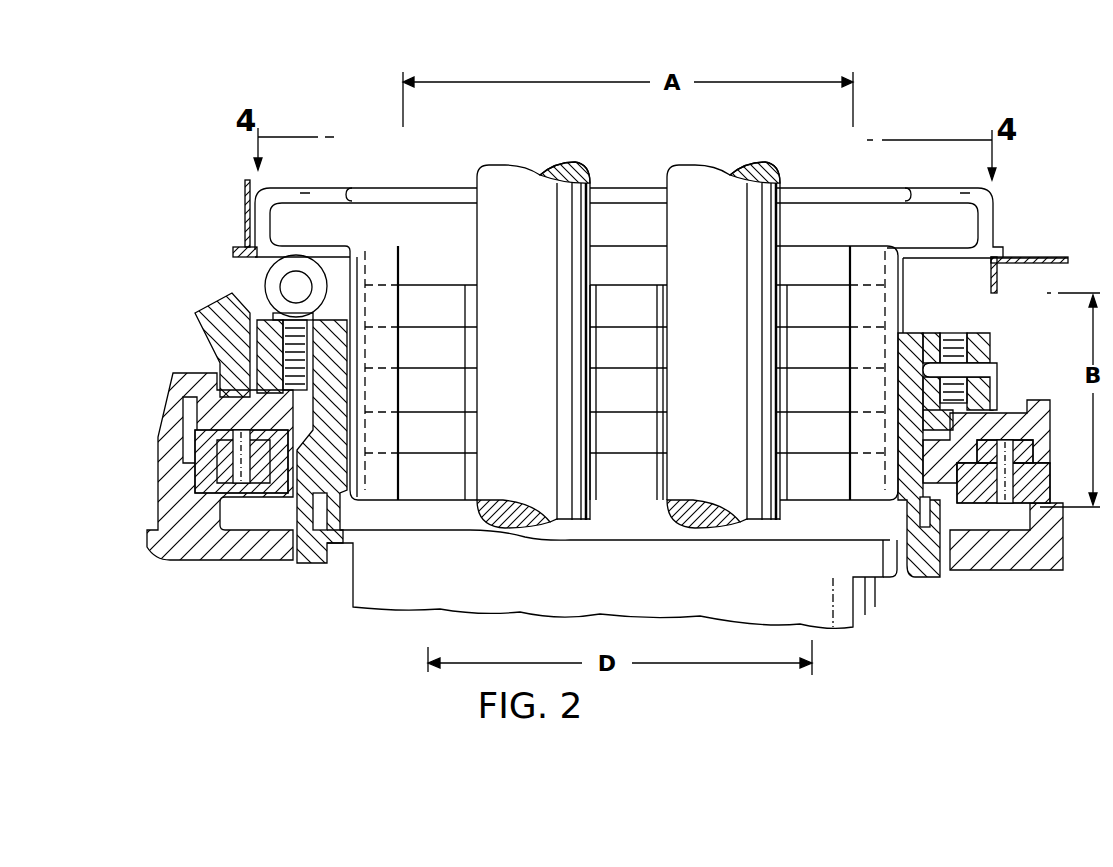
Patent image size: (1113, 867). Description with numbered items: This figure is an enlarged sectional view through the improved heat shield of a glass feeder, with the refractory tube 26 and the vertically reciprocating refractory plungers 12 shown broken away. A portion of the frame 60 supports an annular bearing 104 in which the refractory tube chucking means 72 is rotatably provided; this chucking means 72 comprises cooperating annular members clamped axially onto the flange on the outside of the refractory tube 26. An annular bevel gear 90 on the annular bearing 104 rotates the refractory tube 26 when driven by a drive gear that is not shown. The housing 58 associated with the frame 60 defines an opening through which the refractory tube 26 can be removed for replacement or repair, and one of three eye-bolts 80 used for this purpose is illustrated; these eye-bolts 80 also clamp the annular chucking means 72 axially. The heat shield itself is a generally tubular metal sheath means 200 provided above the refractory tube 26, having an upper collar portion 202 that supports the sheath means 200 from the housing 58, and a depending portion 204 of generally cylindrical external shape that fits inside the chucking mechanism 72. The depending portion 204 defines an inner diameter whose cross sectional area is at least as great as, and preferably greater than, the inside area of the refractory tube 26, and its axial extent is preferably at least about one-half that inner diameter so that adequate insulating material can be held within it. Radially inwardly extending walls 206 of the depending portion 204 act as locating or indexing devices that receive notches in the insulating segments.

The refractory plungers 12 is at (592, 222).
The refractory tube 26 is at (352, 582).
The housing 58 is at (244, 200).
The frame 60 is at (251, 563).
The refractory tube chucking means 72 is at (1003, 376).
The eye-bolts 80 is at (266, 283).
The annular bevel gear 90 is at (213, 306).
The annular bearing 104 is at (260, 497).
The tubular metal sheath means 200 is at (883, 247).
The upper collar portion 202 is at (300, 243).
The depending portion 204 is at (905, 302).
The radially inwardly extending walls 206 is at (400, 276).